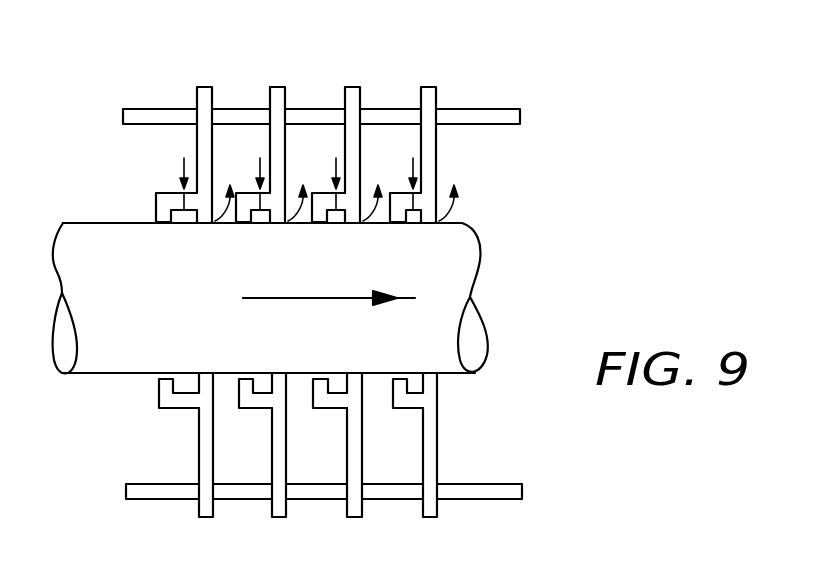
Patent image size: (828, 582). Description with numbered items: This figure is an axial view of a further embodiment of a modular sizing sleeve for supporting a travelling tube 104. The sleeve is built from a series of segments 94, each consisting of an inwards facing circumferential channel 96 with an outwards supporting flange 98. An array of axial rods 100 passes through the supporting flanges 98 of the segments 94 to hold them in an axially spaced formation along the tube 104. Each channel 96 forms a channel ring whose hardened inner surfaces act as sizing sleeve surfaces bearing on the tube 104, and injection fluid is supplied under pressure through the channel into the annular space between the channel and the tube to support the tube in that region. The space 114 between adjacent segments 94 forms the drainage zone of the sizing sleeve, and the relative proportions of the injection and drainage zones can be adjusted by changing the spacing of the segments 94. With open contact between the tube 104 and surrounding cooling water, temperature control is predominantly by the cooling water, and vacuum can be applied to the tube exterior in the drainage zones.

The segment 94 is at (218, 78).
The axial rod 100 is at (480, 109).
The travelling tube 104 is at (67, 262).
The circumferential channel 96 is at (159, 393).
The supporting flange 98 is at (199, 449).
The space between adjacent segments 114 is at (375, 395).